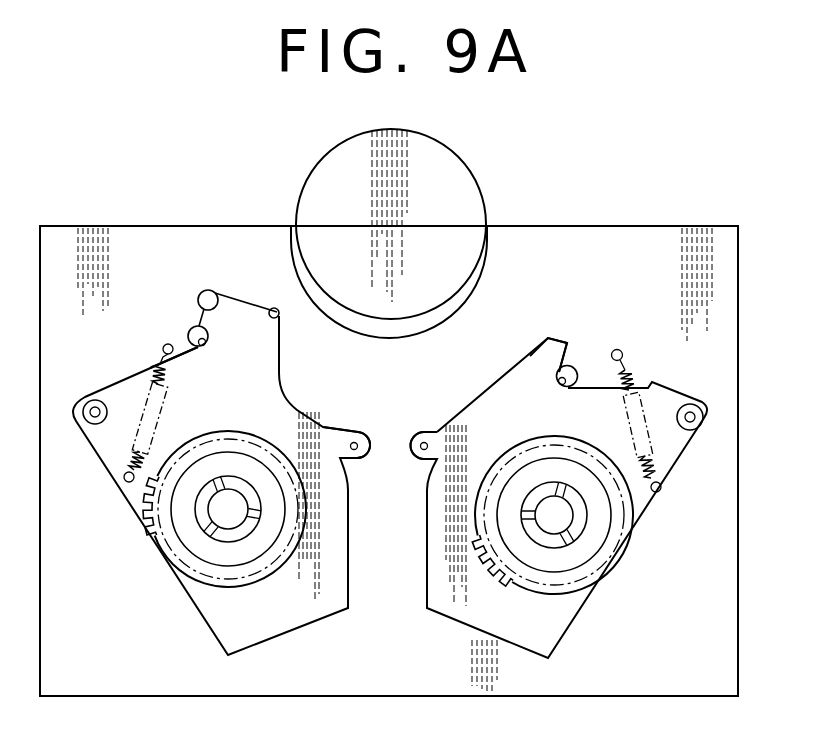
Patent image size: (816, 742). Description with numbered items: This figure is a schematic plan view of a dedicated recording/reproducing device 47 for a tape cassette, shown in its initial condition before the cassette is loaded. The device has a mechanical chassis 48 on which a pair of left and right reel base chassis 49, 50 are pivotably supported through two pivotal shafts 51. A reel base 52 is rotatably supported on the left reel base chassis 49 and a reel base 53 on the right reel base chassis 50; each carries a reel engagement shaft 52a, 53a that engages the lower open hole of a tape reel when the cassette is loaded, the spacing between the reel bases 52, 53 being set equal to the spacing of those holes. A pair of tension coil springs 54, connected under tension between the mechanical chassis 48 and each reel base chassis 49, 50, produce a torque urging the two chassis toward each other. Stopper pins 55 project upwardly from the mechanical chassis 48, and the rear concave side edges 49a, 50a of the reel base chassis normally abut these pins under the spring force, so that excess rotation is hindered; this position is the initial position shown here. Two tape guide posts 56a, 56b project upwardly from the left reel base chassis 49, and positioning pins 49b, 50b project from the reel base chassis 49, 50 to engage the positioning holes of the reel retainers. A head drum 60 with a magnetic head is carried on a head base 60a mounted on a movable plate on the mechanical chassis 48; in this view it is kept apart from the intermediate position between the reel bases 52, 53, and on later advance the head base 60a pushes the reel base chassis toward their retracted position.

The dedicated recording/reproducing device 47 is at (543, 218).
The mechanical chassis 48 is at (657, 240).
The left reel base chassis 49 is at (316, 622).
The rear concave side edge 49a is at (201, 350).
The positioning pin 49b is at (352, 441).
The right reel base chassis 50 is at (573, 628).
The rear concave side edge 50a is at (557, 372).
The positioning pin 50b is at (424, 441).
The pivotal shaft 51 is at (87, 398).
The reel base 52 is at (150, 521).
The reel engagement shaft 52a is at (215, 512).
The reel base 53 is at (602, 582).
The reel engagement shaft 53a is at (560, 517).
The tension coil spring 54 is at (153, 362).
The stopper pin 55 is at (190, 328).
The tape guide post 56a is at (208, 289).
The tape guide post 56b is at (274, 307).
The head drum 60 is at (455, 183).
The head base 60a is at (470, 287).